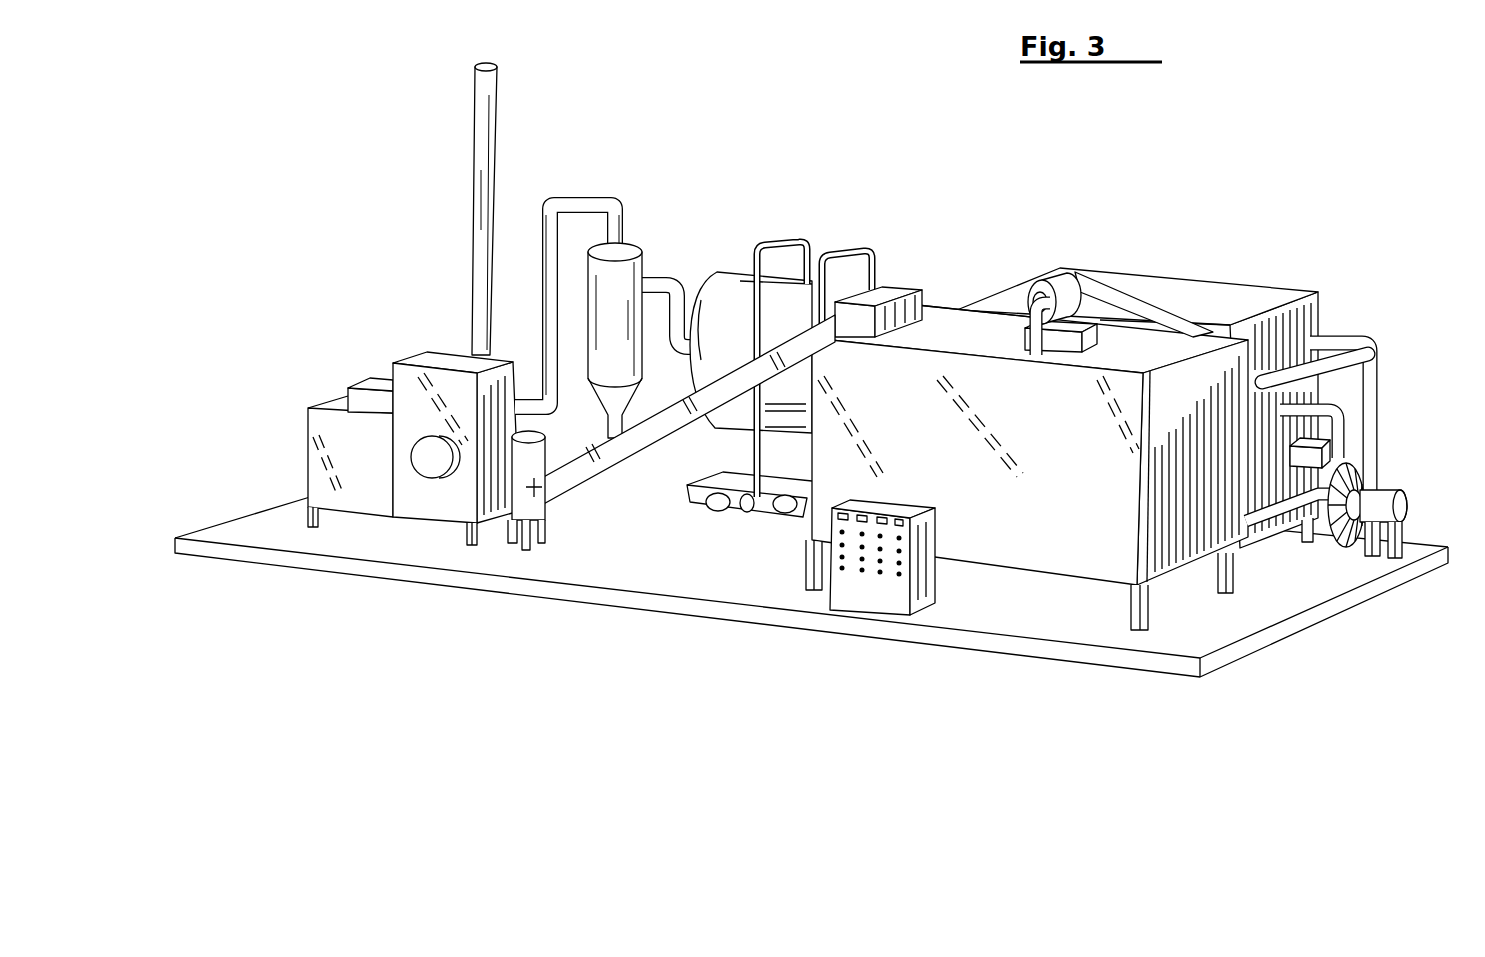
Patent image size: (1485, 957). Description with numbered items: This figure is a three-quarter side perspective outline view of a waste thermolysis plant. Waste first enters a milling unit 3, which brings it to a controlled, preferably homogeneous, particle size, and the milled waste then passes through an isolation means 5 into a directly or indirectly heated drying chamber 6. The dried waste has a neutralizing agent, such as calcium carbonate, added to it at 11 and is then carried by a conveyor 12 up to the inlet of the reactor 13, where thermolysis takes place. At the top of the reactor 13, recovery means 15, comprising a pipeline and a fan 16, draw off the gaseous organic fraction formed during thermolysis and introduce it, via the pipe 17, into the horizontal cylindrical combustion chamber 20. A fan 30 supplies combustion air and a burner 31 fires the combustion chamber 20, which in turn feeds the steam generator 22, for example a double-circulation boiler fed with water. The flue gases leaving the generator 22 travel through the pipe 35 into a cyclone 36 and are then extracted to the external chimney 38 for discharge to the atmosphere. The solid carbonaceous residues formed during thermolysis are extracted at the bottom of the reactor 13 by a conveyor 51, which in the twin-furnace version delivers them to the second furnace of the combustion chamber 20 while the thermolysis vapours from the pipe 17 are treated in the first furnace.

The milling unit 3 is at (324, 403).
The isolation means 5 is at (376, 394).
The drying chamber 6 is at (432, 357).
The neutralizing agent addition point 11 is at (547, 498).
The conveyor 12 is at (657, 424).
The reactor 13 is at (1083, 534).
The recovery means 15 is at (1030, 297).
The fan 16 is at (1065, 277).
The pipe 17 is at (1333, 347).
The combustion chamber 20 is at (1188, 292).
The steam generator 22 is at (735, 280).
The fan 30 is at (1347, 548).
The burner 31 is at (1340, 430).
The pipe 35 is at (669, 285).
The cyclone 36 is at (631, 246).
The external chimney 38 is at (483, 125).
The conveyor 51 is at (1262, 523).